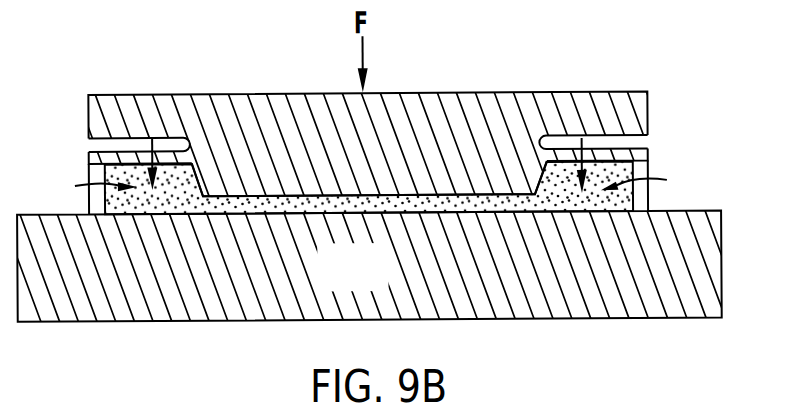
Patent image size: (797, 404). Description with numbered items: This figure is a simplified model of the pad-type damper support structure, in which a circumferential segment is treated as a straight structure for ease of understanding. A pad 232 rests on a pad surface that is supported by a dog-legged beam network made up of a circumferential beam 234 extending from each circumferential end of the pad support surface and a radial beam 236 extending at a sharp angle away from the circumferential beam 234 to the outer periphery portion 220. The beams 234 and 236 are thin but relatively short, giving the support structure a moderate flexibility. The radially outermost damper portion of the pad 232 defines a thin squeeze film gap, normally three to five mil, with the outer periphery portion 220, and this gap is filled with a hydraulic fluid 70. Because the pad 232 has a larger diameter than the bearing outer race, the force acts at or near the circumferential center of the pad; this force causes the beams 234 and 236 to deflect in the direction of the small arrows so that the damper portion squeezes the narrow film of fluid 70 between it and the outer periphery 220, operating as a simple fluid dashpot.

The pad 232 is at (156, 94).
The circumferential beam 234 is at (615, 158).
The radial beam 236 is at (648, 152).
The outer periphery portion 220 is at (385, 283).
The hydraulic fluid 70 is at (490, 206).